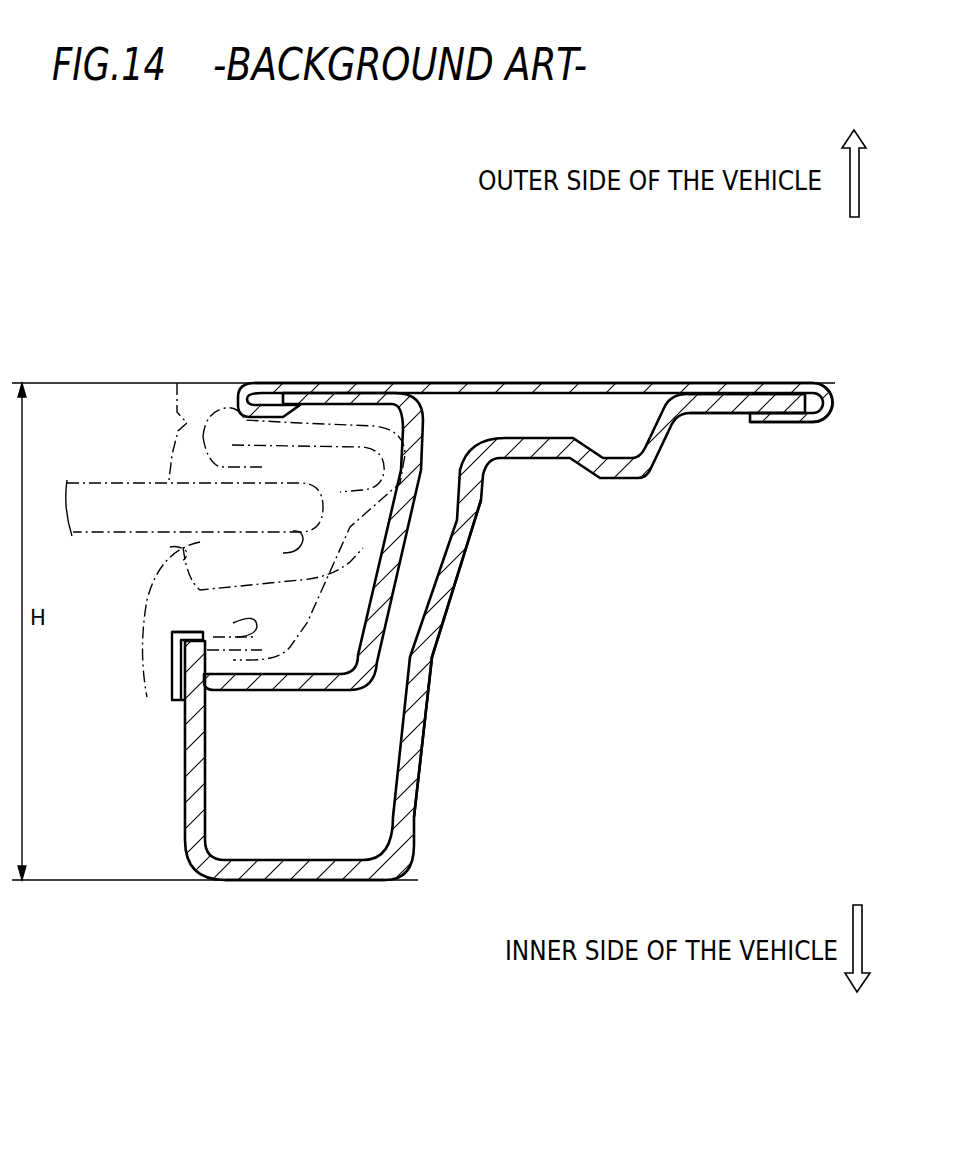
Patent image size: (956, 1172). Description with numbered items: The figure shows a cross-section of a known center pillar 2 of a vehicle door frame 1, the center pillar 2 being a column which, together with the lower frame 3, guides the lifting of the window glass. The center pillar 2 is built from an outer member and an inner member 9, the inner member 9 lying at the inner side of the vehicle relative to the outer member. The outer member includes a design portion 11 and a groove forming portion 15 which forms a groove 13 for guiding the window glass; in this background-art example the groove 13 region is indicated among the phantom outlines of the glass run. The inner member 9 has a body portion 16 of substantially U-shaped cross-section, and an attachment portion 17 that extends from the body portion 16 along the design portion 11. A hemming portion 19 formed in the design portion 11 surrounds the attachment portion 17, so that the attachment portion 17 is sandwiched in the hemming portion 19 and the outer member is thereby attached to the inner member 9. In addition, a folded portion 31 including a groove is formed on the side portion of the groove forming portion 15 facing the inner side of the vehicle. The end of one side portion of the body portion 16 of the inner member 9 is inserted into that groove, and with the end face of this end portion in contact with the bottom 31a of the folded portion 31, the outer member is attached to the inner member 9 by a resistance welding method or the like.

The door frame 1 is at (177, 383).
The center pillar 2 is at (586, 354).
The lower frame 3 is at (293, 671).
The inner member 9 is at (424, 830).
The design portion 11 is at (492, 383).
The groove 13 is at (346, 561).
The groove forming portion 15 is at (303, 667).
The body portion 16 is at (302, 881).
The attachment portion 17 is at (730, 405).
The hemming portion 19 is at (829, 383).
The folded portion 31 is at (172, 685).
The bottom 31a is at (173, 639).